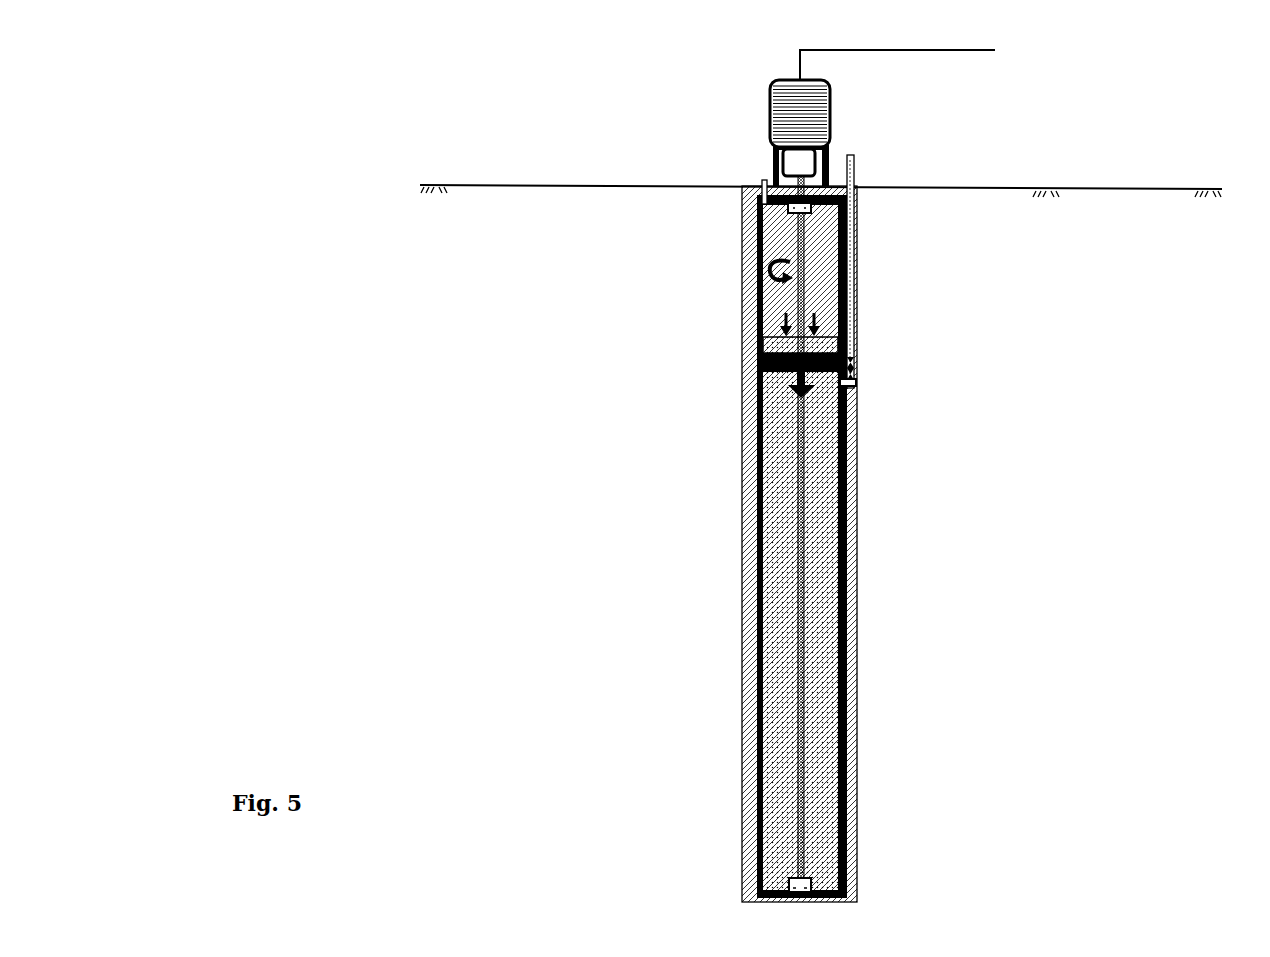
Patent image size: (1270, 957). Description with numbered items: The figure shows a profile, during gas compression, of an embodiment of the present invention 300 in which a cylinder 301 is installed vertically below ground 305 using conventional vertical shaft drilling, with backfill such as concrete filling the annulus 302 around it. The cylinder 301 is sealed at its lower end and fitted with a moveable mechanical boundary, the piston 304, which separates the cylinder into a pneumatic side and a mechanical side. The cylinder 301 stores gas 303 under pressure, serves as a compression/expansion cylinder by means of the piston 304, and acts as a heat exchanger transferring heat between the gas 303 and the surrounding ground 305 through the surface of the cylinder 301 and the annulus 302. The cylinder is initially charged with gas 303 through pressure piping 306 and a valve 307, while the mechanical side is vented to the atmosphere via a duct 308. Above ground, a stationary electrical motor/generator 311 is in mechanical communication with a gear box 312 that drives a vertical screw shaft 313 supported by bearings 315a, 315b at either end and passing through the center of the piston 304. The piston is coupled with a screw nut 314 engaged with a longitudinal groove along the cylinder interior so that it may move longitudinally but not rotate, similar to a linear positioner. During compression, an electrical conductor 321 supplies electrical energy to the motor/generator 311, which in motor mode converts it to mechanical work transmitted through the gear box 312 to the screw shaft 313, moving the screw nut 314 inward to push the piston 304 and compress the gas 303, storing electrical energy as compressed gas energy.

The embodiment of the present invention 300 is at (133, 160).
The cylinder 301 is at (755, 740).
The annulus 302 is at (752, 845).
The gas 303 is at (822, 730).
The piston 304 is at (822, 388).
The ground 305 is at (1082, 190).
The pressure piping 306 is at (855, 156).
The valve 307 is at (855, 371).
The duct 308 is at (762, 182).
The electrical motor/generator 311 is at (772, 97).
The gear box 312 is at (818, 155).
The vertical screw shaft 313 is at (796, 250).
The screw nut 314 is at (768, 345).
The bearing 315a is at (822, 878).
The bearing 315b is at (812, 208).
The electrical conductor 321 is at (980, 50).